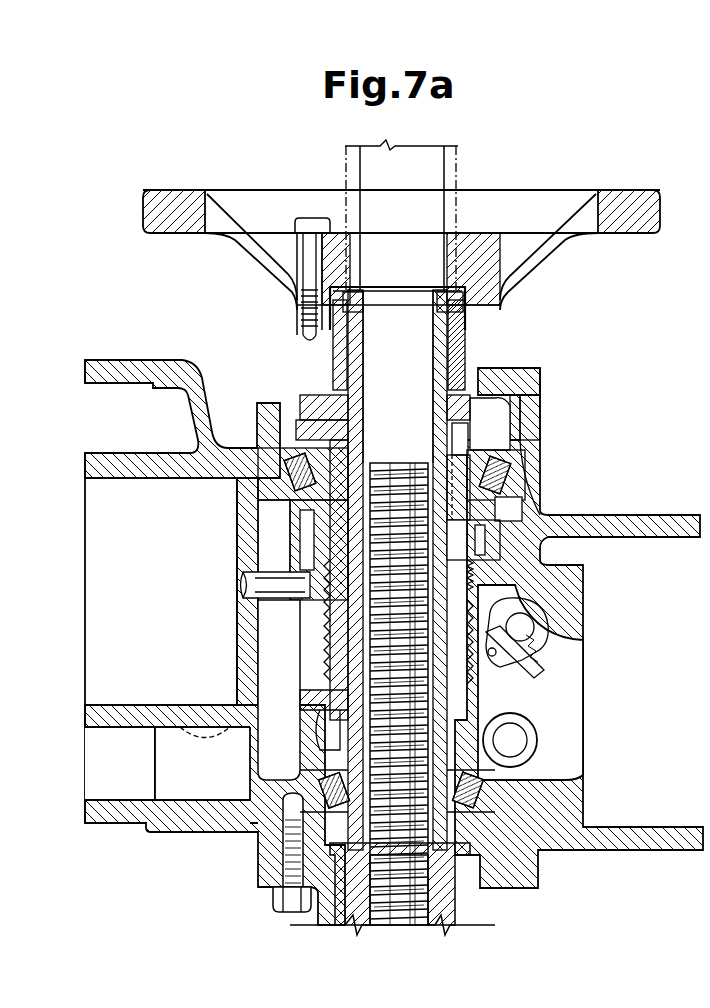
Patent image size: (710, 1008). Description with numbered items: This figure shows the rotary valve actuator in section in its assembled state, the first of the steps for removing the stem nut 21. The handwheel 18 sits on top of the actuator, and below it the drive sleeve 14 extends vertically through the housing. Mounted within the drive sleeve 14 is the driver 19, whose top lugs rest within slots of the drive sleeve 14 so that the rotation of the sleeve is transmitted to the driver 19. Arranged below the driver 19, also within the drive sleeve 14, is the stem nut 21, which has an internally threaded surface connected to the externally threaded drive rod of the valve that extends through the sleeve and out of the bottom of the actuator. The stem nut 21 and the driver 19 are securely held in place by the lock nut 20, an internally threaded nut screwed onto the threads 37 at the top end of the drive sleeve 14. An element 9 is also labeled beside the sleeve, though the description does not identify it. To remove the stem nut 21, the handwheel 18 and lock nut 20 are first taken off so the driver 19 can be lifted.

The handwheel 18 is at (623, 190).
The lock nut 20 is at (470, 316).
The threads 37 is at (490, 360).
The drive sleeve 14 is at (447, 383).
The driver 19 is at (440, 402).
The spring 9 is at (470, 590).
The stem nut 21 is at (500, 714).